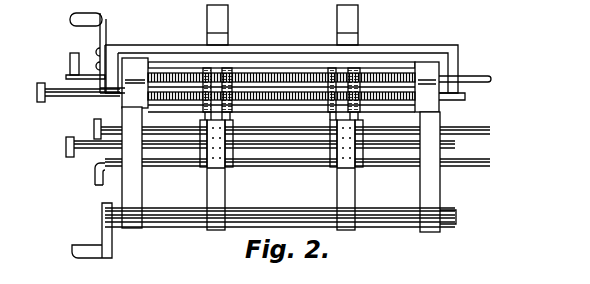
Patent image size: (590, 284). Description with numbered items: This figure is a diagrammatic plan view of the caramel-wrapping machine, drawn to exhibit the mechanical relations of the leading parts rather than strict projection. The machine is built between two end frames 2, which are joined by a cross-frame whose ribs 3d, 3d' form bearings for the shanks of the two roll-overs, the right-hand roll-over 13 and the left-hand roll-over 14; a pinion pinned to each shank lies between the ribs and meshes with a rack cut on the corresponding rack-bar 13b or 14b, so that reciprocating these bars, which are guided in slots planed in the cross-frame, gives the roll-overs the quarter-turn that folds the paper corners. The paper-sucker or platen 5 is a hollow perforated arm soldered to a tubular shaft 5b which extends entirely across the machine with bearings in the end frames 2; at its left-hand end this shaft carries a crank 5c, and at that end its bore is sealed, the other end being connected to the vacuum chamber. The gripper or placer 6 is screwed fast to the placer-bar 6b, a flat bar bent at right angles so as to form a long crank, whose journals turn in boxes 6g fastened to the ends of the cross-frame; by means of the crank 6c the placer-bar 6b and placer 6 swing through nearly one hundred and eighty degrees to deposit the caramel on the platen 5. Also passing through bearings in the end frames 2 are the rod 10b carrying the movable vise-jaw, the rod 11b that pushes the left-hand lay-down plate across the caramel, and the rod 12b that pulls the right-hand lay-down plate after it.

The end frames 2 is at (281, 169).
The paper-sucker or platen 5 is at (281, 175).
The tubular shaft 5b is at (456, 218).
The crank 5c is at (92, 250).
The gripper or placer 6 is at (282, 25).
The placer-bar 6b is at (281, 45).
The crank 6c is at (70, 19).
The boxes 6g is at (280, 85).
The rib of cross-frame 3d is at (281, 69).
The rib of cross-frame 3d' is at (281, 112).
The rod 10b is at (66, 147).
The rod 11b is at (93, 128).
The rod 12b is at (95, 176).
The first or right-hand roll-over 13 is at (230, 167).
The rack-bar 13b is at (37, 93).
The second or left-hand roll-over 14 is at (203, 167).
The rack-bar 14b is at (68, 76).